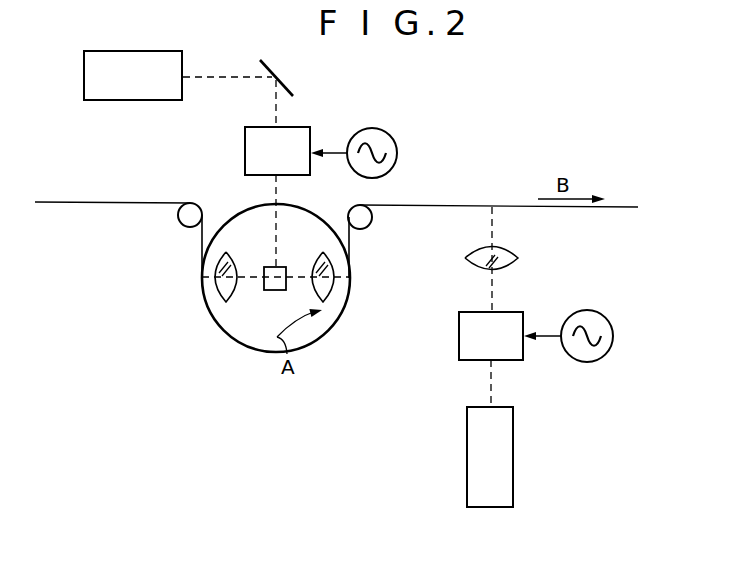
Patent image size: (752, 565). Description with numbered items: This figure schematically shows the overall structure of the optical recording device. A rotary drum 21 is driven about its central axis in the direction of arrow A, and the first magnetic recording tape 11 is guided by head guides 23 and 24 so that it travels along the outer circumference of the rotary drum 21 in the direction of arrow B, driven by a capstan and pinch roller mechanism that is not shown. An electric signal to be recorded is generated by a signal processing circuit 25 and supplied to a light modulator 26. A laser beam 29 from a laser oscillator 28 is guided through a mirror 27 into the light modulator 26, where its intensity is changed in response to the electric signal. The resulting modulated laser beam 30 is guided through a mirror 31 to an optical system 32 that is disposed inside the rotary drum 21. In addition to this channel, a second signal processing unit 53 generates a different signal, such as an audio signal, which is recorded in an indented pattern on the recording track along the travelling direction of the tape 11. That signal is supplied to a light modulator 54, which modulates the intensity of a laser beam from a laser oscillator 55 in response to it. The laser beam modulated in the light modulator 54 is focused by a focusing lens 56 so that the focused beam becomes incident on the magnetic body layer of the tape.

The first magnetic recording tape 11 is at (434, 204).
The rotary drum 21 is at (340, 318).
The head guide 23 is at (180, 222).
The head guide 24 is at (371, 223).
The signal processing circuit 25 is at (396, 150).
The light modulator 26 is at (245, 151).
The mirror 27 is at (288, 90).
The laser oscillator 28 is at (145, 51).
The laser beam 29 is at (238, 77).
The modulated laser beam 30 is at (274, 191).
The mirror 31 is at (266, 291).
The optical system 32 is at (218, 315).
The signal processing unit 53 is at (612, 345).
The light modulator 54 is at (459, 341).
The laser oscillator 55 is at (513, 445).
The focusing lens 56 is at (515, 253).